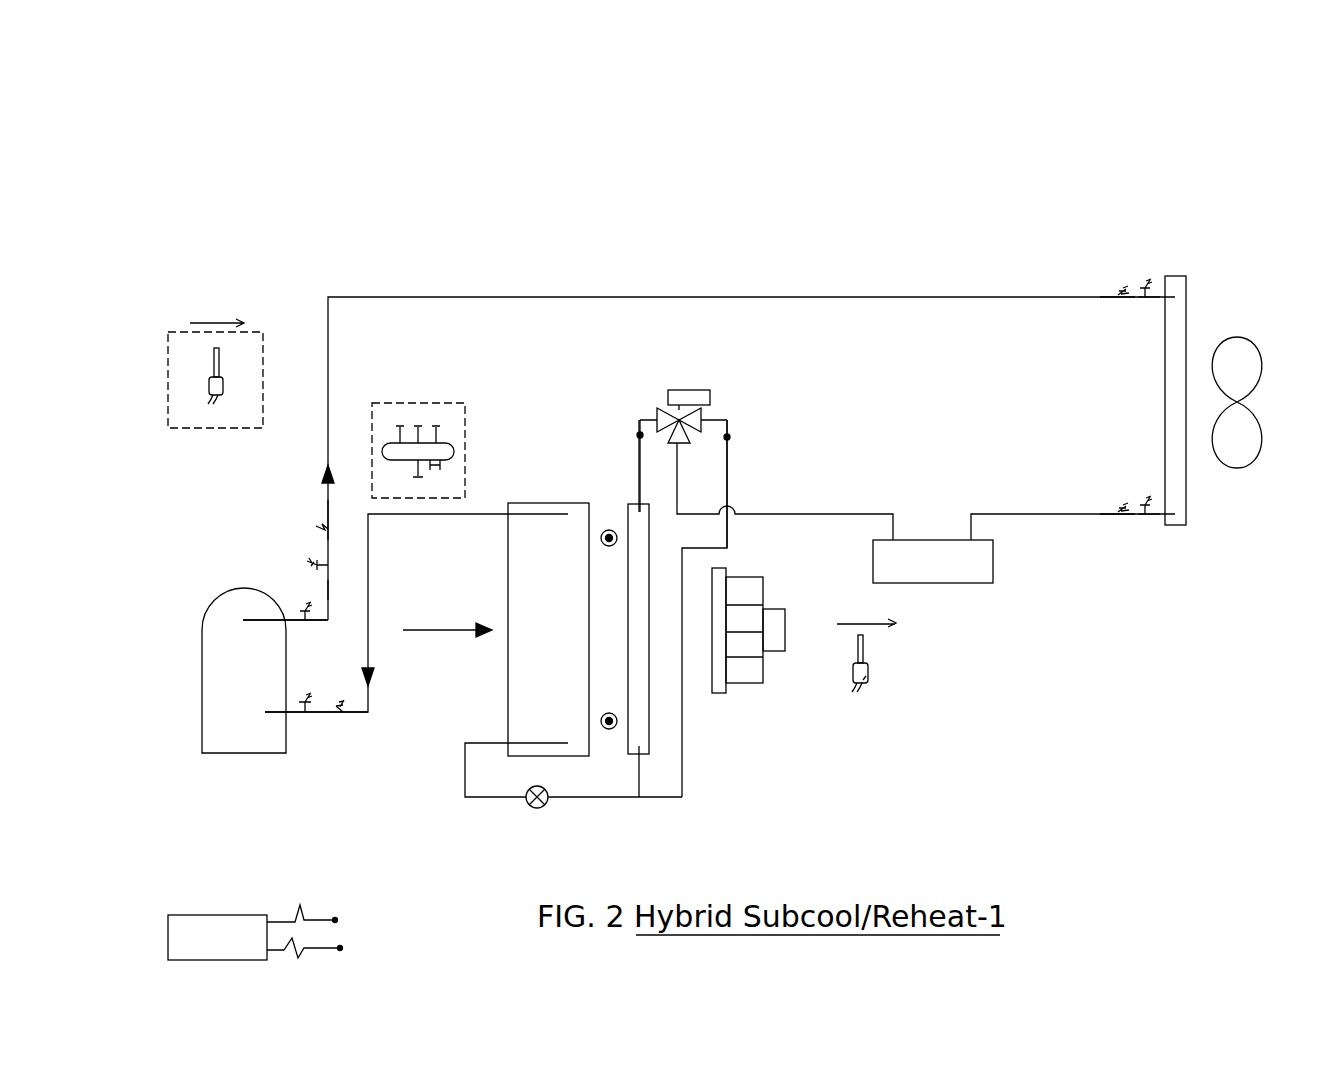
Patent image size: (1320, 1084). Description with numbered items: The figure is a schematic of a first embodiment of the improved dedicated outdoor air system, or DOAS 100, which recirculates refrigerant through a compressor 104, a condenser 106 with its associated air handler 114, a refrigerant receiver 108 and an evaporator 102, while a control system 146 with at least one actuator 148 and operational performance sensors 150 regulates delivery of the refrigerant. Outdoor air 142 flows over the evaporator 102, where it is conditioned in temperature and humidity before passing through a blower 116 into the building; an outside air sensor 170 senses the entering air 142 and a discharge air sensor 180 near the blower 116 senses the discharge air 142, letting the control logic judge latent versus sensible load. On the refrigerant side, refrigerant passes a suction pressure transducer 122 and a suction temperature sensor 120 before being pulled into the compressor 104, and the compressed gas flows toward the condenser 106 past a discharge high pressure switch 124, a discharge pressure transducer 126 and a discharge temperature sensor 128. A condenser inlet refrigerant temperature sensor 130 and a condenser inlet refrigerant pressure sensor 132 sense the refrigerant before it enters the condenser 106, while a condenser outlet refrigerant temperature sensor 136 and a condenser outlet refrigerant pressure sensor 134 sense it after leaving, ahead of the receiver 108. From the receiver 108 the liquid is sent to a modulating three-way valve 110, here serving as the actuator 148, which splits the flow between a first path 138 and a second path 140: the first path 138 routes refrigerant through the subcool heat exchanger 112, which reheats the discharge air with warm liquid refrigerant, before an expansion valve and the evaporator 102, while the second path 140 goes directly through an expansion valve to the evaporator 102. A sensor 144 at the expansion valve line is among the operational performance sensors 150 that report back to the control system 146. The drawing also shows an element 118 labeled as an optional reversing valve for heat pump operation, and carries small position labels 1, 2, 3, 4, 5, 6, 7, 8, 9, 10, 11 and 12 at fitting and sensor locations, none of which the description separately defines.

The DOAS 100 is at (188, 88).
The evaporator 102 is at (520, 704).
The compressor 104 is at (210, 705).
The condenser 106 is at (1178, 318).
The refrigerant receiver 108 is at (990, 583).
The modulating 3-way valve 110 is at (725, 404).
The subcool heat exchanger 112 is at (640, 708).
The air handler 114 is at (1250, 400).
The blower 116 is at (752, 692).
The optional reversing valve 118 is at (462, 403).
The suction temperature sensor 120 is at (340, 718).
The suction pressure transducer 122 is at (307, 717).
The discharge high pressure switch 124 is at (280, 590).
The discharge pressure transducer 126 is at (282, 554).
The discharge temperature sensor 128 is at (303, 516).
The condenser inlet refrigerant temperature sensor 130 is at (1118, 262).
The condenser inlet refrigerant pressure sensor 132 is at (1149, 243).
The condenser outlet refrigerant pressure sensor 134 is at (1145, 526).
The condenser outlet refrigerant temperature sensor 136 is at (1120, 526).
The first path 138 is at (640, 435).
The second path 140 is at (727, 437).
The air stream 142 is at (543, 466).
The operational performance sensor 144 is at (608, 758).
The control system 146 is at (217, 926).
The actuator 148 is at (316, 907).
The operational performance sensors 150 is at (325, 948).
The outdoor temperature/humidity sensor 170 is at (166, 421).
The discharge air sensor 180 is at (878, 695).
The sensor 1 is at (199, 373).
The sensor/port 2 is at (298, 605).
The sensor/port 3 is at (308, 563).
The sensor/port 4 is at (314, 523).
The sensor/port 5 is at (306, 689).
The sensor/port 6 is at (342, 692).
The sensor 7 is at (609, 645).
The sensor 8 is at (873, 684).
The sensor/port 9 is at (1123, 279).
The sensor/port 10 is at (1150, 274).
The sensor/port 11 is at (1123, 497).
The sensor/port 12 is at (1150, 491).